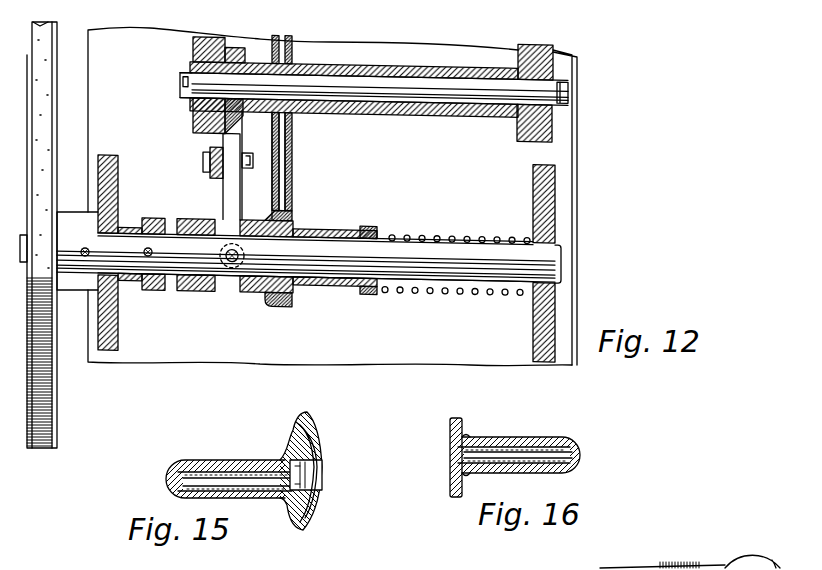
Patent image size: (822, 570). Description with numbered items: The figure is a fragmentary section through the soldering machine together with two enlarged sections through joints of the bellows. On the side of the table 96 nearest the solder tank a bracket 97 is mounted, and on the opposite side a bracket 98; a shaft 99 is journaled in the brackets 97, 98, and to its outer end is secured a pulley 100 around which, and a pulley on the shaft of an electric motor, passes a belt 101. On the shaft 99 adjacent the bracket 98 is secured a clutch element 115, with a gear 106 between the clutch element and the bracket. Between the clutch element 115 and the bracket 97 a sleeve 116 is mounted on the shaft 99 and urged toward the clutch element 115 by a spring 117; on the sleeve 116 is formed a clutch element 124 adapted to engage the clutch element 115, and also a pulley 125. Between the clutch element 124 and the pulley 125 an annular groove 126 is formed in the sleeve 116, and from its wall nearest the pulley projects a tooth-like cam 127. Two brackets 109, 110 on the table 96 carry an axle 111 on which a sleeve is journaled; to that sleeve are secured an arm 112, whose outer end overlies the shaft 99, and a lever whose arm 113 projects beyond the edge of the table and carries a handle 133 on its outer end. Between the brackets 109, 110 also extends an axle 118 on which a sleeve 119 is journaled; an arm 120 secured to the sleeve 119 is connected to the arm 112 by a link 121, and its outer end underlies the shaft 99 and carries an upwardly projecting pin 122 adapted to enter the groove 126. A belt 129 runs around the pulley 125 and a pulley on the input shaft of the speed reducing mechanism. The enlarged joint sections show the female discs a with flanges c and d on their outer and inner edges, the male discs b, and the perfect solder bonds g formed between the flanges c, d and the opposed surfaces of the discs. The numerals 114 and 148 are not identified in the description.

In FIG. 12, the table 96 is at (571, 153).
In FIG. 12, the bracket 97 is at (555, 298).
In FIG. 12, the bracket 98 is at (108, 350).
In FIG. 12, the shaft 99 is at (330, 279).
In FIG. 12, the pulley 100 is at (53, 402).
In FIG. 12, the belt 101 is at (55, 428).
In FIG. 12, the gear 106 is at (125, 293).
In FIG. 12, the bracket 109 is at (197, 118).
In FIG. 12, the bracket 110 is at (555, 127).
In FIG. 12, the clutch element 115 is at (152, 216).
In FIG. 12, the sleeve 116 is at (308, 230).
In FIG. 12, the spring 117 is at (392, 236).
In FIG. 12, the axle 118 is at (180, 78).
In FIG. 12, the sleeve 119 is at (557, 53).
In FIG. 12, the arm 120 is at (293, 125).
In FIG. 12, the link 121 is at (208, 153).
In FIG. 12, the pin 122 is at (227, 272).
In FIG. 12, the clutch element 124 is at (197, 295).
In FIG. 12, the pulley 125 is at (293, 213).
In FIG. 12, the annular groove 126 is at (220, 223).
In FIG. 12, the tooth-like cam 127 is at (250, 295).
In FIG. 12, the belt 129 is at (290, 153).
In FIG. 15, the female disc a is at (296, 436).
In FIG. 16, the female disc a is at (450, 491).
In FIG. 15, the male disc b is at (302, 530).
In FIG. 16, the male disc b is at (458, 419).
In FIG. 15, the flange c is at (258, 499).
In FIG. 16, the flange d is at (530, 440).
In FIG. 15, the solder bond g is at (194, 462).
In FIG. 16, the solder bond g is at (452, 452).
In FIG. 16, the axle 111 is at (386, 569).
In FIG. 16, the arm 112 is at (456, 569).
In FIG. 16, the arm of lever 113 is at (628, 568).
In FIG. 16, the part 114 is at (553, 569).
In FIG. 16, the part 148 is at (520, 569).
In FIG. 16, the handle 133 is at (748, 568).